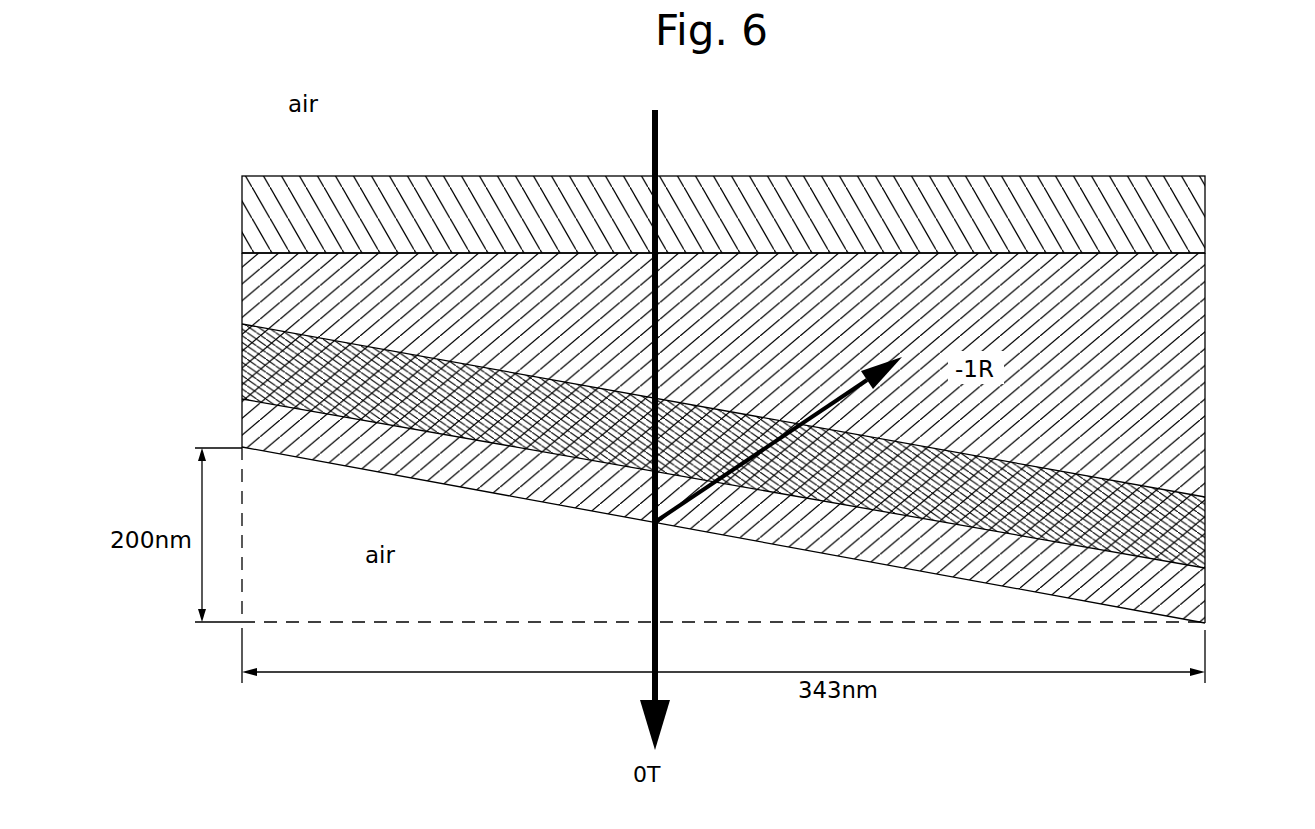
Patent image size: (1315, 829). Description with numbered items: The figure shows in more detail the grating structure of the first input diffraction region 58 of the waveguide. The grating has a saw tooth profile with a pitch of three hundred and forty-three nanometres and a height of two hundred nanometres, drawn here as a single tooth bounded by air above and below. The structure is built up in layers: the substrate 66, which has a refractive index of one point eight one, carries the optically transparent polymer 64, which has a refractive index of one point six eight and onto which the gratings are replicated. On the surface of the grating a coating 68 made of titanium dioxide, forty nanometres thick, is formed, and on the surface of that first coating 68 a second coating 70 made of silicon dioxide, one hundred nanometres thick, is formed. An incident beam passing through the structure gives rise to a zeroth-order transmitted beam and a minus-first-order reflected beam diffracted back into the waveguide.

The input diffraction region 58 is at (467, 148).
The substrate 66 is at (1183, 212).
The optically transparent polymer 64 is at (1187, 331).
The coating 68 is at (1183, 536).
The second coating 70 is at (1187, 597).